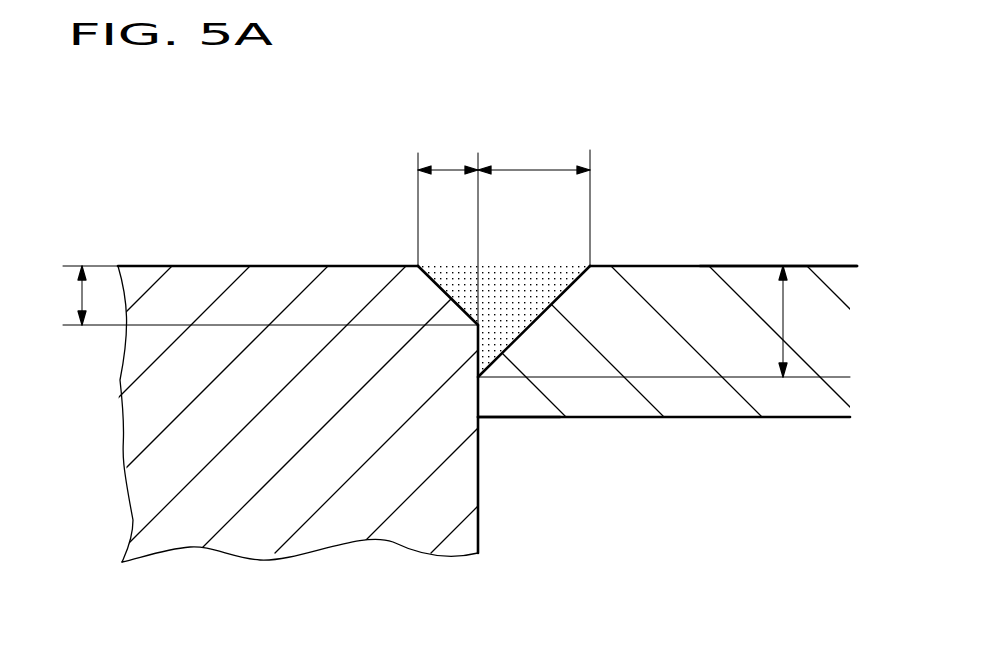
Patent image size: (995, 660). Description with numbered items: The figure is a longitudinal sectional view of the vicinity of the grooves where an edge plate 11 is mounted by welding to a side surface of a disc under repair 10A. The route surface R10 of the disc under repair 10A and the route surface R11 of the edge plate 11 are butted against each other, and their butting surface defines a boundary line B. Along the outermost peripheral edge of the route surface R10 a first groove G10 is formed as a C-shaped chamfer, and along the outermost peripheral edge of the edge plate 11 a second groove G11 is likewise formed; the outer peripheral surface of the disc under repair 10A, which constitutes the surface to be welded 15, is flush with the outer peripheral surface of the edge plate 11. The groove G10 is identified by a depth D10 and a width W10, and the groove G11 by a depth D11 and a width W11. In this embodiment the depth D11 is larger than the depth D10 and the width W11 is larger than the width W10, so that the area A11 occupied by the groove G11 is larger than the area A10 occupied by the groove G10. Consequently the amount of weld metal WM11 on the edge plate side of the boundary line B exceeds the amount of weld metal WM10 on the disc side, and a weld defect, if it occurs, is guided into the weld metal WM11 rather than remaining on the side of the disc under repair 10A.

The disc under repair 10A is at (230, 266).
The edge plate 11 is at (702, 266).
The surface to be welded 15 is at (825, 266).
The boundary line B is at (480, 157).
The width of groove G10 W10 is at (448, 150).
The width of groove G11 W11 is at (534, 150).
The area occupied by groove G10 A10 is at (404, 211).
The weld metal on groove G10 side WM10 is at (448, 277).
The area occupied by groove G11 A11 is at (534, 263).
The weld metal on groove G11 side WM11 is at (513, 282).
The first groove G10 is at (448, 283).
The second groove G11 is at (548, 305).
The depth of groove G10 D10 is at (248, 295).
The depth of groove G11 D11 is at (788, 315).
The route surface of disc under repair R10 is at (478, 525).
The route surface of edge plate R11 is at (475, 398).